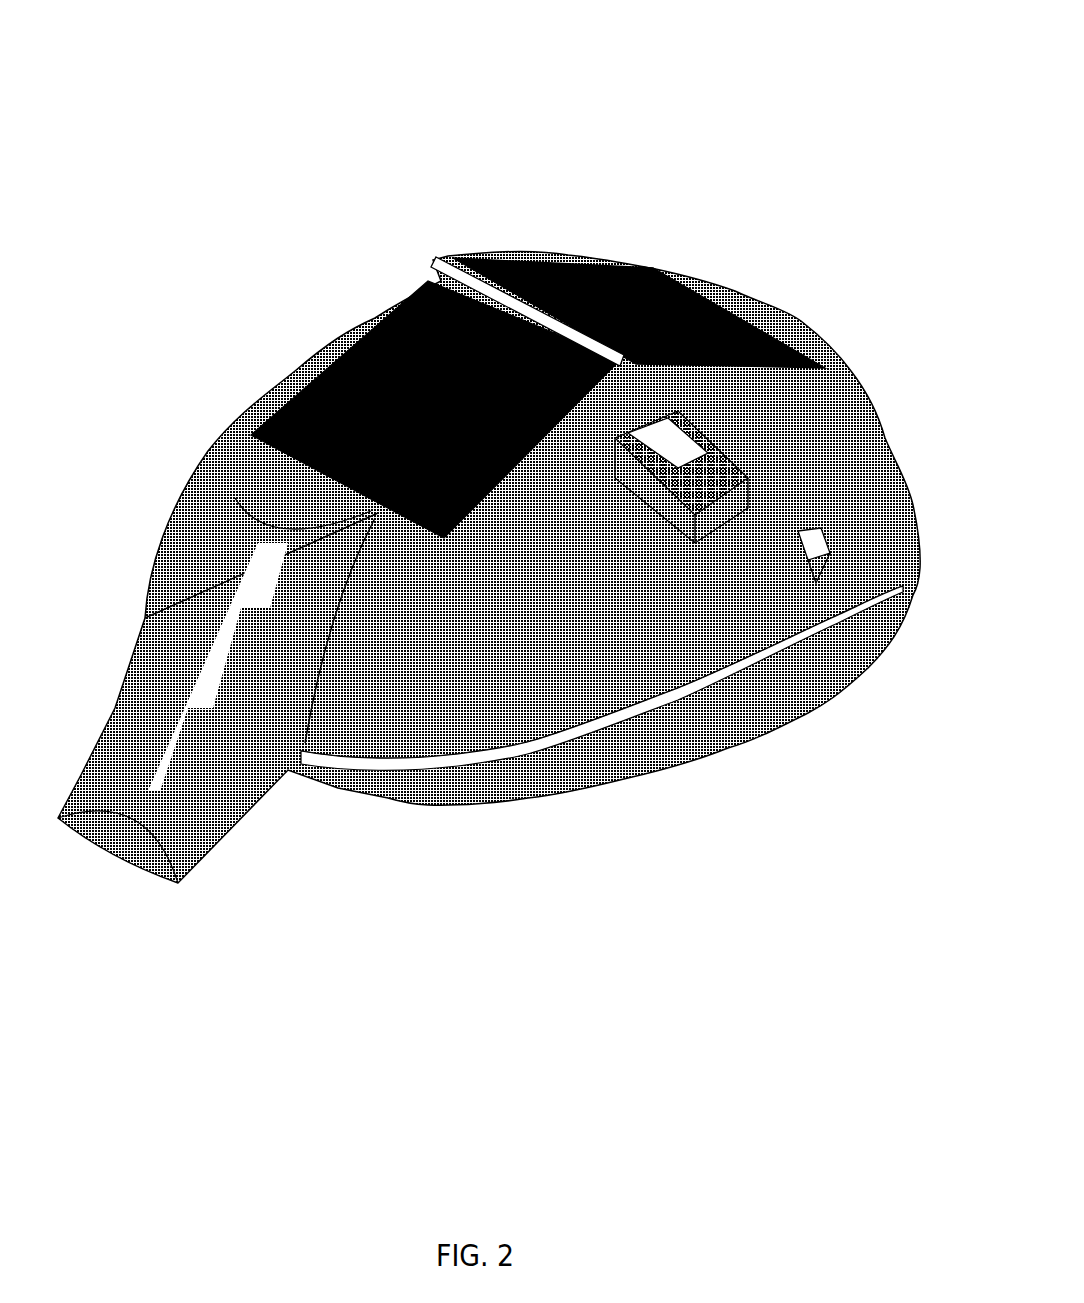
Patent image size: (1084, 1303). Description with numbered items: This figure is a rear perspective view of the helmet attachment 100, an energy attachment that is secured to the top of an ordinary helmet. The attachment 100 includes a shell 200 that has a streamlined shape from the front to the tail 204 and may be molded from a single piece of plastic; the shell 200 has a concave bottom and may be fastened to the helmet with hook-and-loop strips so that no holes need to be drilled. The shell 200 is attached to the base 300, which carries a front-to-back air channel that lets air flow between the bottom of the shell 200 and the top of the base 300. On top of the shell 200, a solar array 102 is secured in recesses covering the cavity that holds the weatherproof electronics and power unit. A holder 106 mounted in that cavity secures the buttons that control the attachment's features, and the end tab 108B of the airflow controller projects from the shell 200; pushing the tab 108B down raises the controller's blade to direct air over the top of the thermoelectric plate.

The helmet attachment 100 is at (489, 469).
The solar array 102 is at (515, 262).
The holder 106 is at (695, 483).
The end tab 108B is at (818, 553).
The shell 200 is at (205, 463).
The tail 204 is at (227, 797).
The base 300 is at (524, 763).